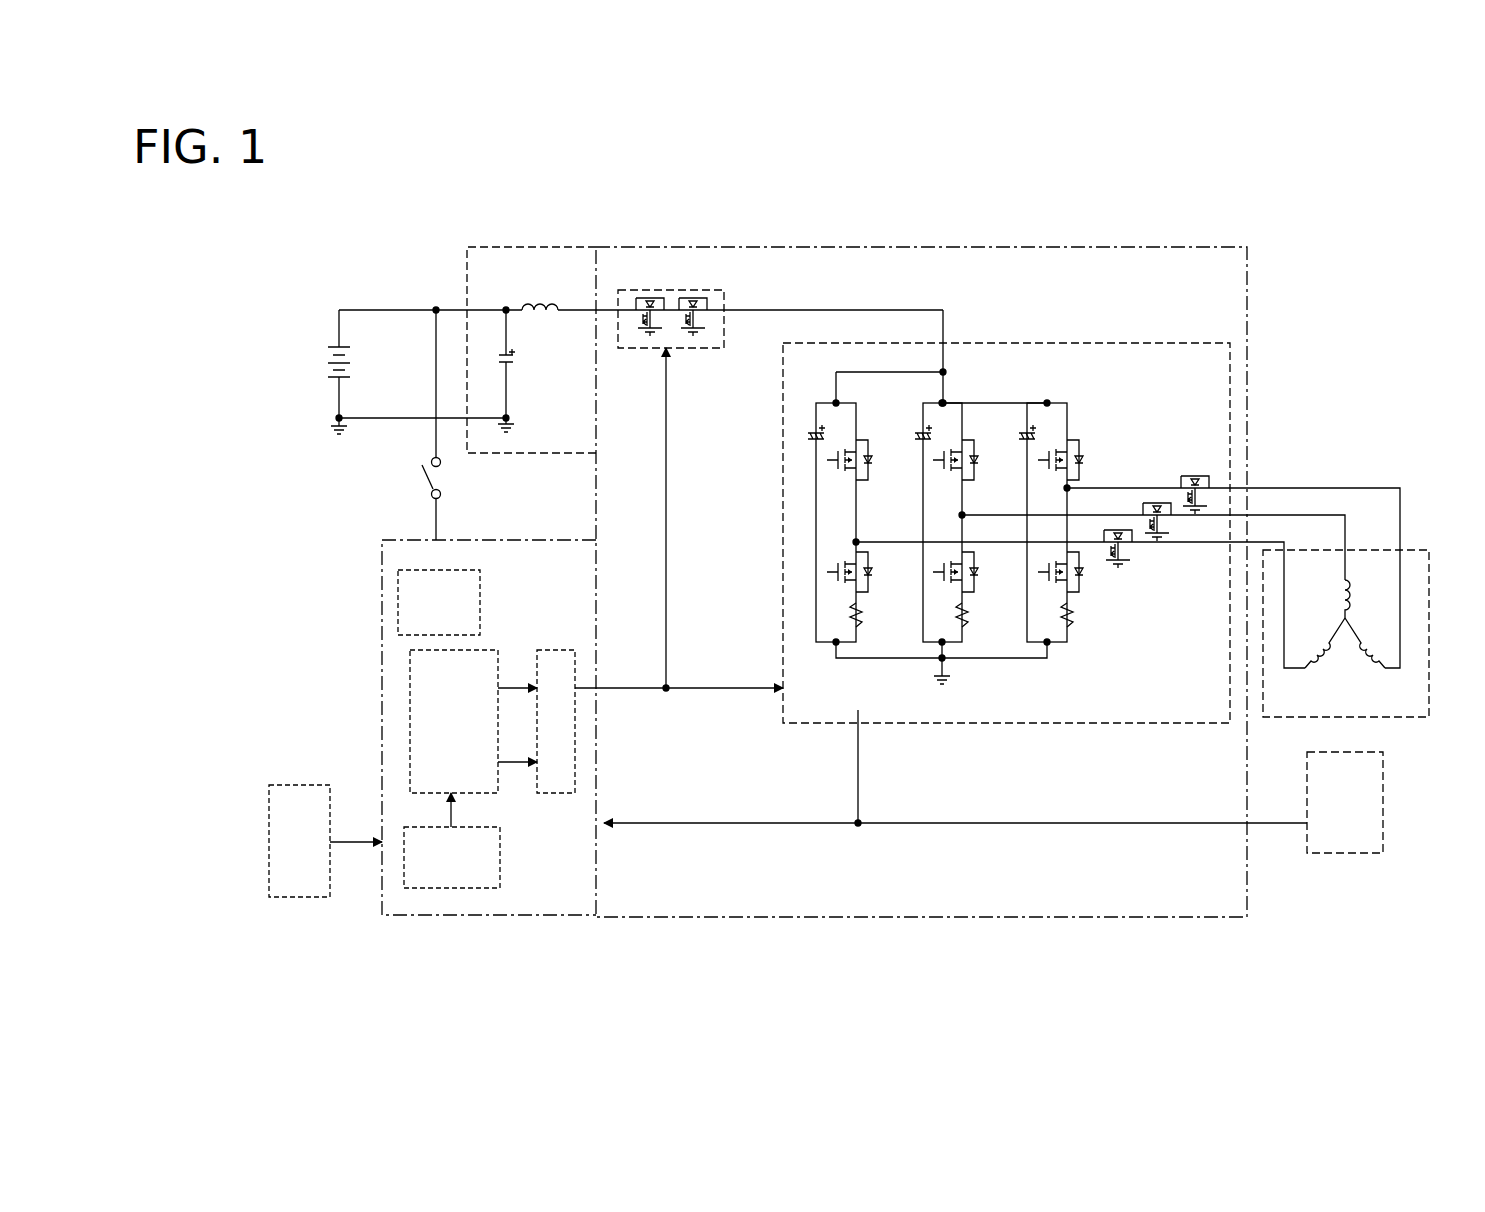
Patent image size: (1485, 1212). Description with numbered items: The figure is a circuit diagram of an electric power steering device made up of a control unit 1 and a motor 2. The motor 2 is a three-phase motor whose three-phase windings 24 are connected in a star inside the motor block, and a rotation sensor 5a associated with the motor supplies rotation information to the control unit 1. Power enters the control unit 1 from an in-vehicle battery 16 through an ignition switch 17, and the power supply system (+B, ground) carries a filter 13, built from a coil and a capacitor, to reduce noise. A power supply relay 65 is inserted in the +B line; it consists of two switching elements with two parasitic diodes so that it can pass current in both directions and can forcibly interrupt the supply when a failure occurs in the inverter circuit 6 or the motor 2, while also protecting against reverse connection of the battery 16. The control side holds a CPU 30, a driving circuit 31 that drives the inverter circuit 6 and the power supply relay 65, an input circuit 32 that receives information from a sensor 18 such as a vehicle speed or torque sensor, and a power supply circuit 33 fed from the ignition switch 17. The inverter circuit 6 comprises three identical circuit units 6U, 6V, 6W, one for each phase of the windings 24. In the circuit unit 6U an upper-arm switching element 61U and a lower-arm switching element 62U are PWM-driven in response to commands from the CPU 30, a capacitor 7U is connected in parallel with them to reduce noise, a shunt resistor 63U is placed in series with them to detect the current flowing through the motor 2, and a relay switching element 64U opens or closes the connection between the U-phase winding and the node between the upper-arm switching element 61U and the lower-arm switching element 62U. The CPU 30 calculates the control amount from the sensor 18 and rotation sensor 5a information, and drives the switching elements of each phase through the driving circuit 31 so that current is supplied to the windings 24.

The control unit 1 is at (1023, 245).
The motor 2 is at (1346, 548).
The rotation sensor 5a is at (1357, 858).
The inverter circuit 6 is at (1150, 343).
The circuit unit 6U is at (824, 487).
The circuit unit 6V is at (945, 400).
The circuit unit 6W is at (1050, 400).
The capacitor 7U is at (808, 438).
The filter 13 is at (553, 270).
The battery 16 is at (330, 338).
The ignition switch 17 is at (425, 470).
The sensor 18 is at (300, 897).
The three-phase windings 24 is at (1345, 578).
The CPU 30 is at (410, 723).
The driving circuit 31 is at (577, 728).
The input circuit 32 is at (475, 890).
The power supply circuit 33 is at (397, 592).
The upper-arm switching element 61U is at (863, 441).
The lower-arm switching element 62U is at (828, 571).
The shunt resistor 63U is at (858, 628).
The relay switching element 64U is at (1118, 566).
The power supply relay 65 is at (678, 270).